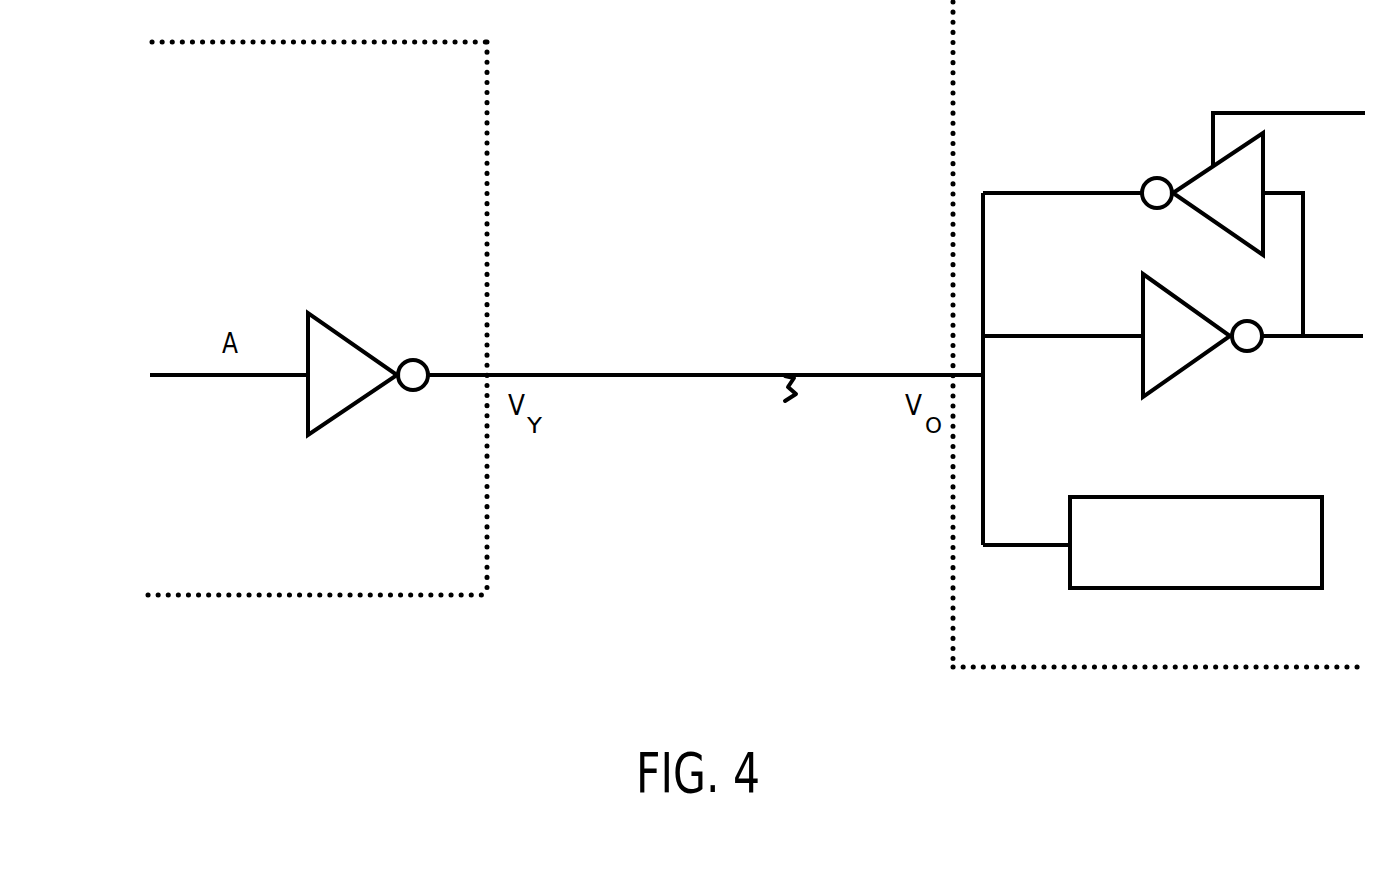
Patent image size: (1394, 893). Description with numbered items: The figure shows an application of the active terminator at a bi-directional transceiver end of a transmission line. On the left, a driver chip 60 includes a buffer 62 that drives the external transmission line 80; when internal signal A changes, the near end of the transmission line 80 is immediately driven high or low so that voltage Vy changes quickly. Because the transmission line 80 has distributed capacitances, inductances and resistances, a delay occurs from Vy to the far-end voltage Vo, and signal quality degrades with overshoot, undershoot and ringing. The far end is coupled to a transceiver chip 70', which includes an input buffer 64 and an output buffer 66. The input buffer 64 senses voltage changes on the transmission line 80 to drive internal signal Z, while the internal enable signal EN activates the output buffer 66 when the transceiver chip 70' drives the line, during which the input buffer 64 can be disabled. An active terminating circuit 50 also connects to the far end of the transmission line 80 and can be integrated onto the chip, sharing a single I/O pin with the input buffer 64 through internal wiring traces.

The driver chip 60 is at (447, 117).
The buffer 62 is at (345, 389).
The transmission line 80 is at (705, 370).
The transceiver chip 70' is at (1159, 334).
The output buffer 66 is at (1253, 208).
The input buffer 64 is at (1180, 350).
The active terminating circuit 50 is at (1307, 572).